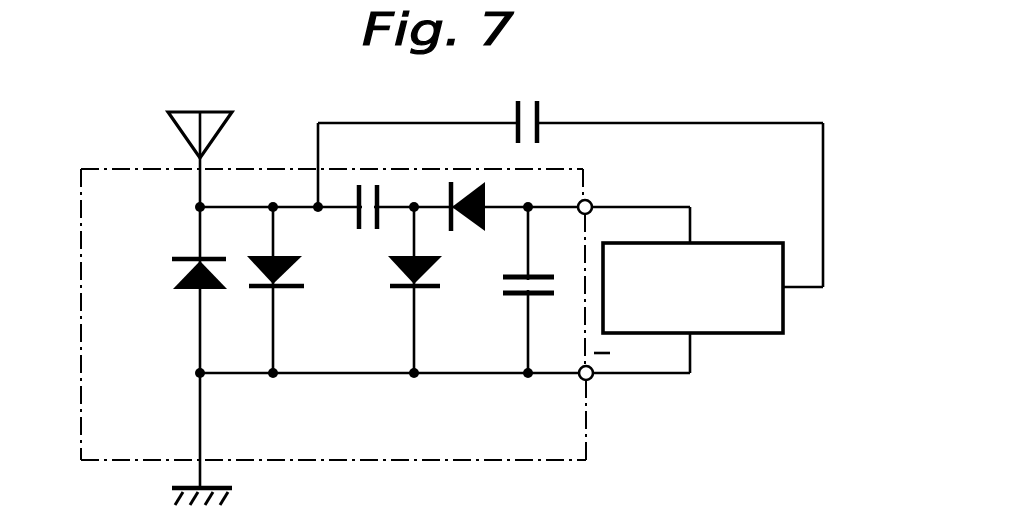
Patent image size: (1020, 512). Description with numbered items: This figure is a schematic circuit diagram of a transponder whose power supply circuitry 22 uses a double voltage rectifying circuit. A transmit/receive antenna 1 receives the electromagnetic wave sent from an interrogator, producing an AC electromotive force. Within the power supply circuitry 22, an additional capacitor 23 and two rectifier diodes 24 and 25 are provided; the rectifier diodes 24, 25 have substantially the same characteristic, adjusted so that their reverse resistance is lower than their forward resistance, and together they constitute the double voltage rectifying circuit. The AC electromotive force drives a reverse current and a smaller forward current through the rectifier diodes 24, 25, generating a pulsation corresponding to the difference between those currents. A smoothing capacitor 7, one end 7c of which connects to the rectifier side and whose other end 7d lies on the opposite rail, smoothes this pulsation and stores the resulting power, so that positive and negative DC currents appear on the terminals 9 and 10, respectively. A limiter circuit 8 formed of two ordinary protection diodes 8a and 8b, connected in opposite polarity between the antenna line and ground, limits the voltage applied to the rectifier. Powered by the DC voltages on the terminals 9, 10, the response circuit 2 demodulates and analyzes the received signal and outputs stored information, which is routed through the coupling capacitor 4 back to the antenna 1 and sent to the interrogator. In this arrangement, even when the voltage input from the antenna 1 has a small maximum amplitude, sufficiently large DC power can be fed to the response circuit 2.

The transmit/receive antenna 1 is at (176, 127).
The response circuit 2 is at (740, 242).
The coupling capacitor 4 is at (541, 113).
The smoothing capacitor 7 is at (522, 307).
The one end of smoothing capacitor 7c is at (530, 209).
The capacitor terminal 7d is at (530, 375).
The limiter circuit 8 is at (215, 274).
The protection diode 8a is at (264, 290).
The protection diode 8b is at (175, 278).
The terminal 9 is at (590, 202).
The terminal 10 is at (593, 376).
The power supply circuitry 22 is at (533, 460).
The additional capacitor 23 is at (366, 185).
The rectifier diode 24 is at (476, 232).
The rectifier diode 25 is at (395, 266).